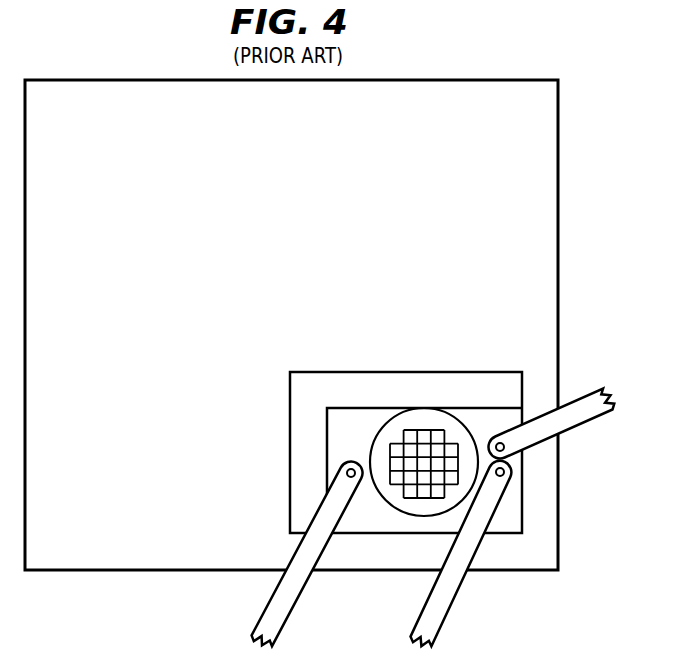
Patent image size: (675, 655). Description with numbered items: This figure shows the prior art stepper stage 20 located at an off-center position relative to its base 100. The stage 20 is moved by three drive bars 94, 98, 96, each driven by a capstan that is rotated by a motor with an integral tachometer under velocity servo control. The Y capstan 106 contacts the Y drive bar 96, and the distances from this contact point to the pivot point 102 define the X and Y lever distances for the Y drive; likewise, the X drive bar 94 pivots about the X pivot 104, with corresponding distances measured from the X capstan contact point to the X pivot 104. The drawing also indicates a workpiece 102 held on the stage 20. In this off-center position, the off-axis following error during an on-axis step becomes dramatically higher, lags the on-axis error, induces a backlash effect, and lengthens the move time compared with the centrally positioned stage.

The stage 20 is at (508, 519).
The drive bar 94 is at (590, 397).
The drive bar 96 is at (447, 618).
The drive bar 98 is at (282, 580).
The base 100 is at (558, 178).
The pivot point 102 is at (403, 432).
The X pivot 104 is at (499, 438).
The Y capstan 106 is at (506, 471).